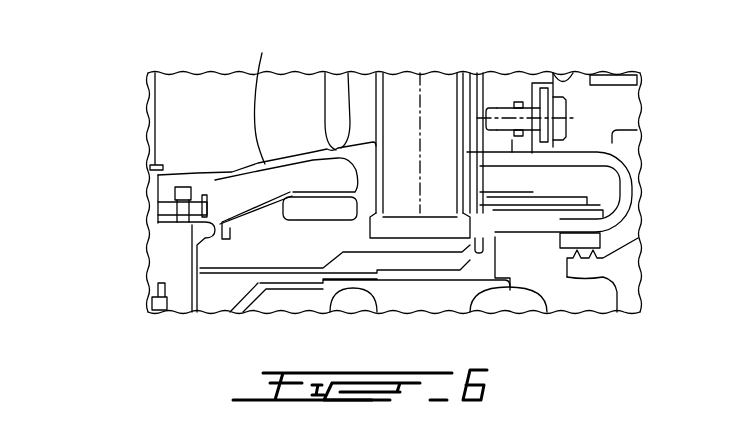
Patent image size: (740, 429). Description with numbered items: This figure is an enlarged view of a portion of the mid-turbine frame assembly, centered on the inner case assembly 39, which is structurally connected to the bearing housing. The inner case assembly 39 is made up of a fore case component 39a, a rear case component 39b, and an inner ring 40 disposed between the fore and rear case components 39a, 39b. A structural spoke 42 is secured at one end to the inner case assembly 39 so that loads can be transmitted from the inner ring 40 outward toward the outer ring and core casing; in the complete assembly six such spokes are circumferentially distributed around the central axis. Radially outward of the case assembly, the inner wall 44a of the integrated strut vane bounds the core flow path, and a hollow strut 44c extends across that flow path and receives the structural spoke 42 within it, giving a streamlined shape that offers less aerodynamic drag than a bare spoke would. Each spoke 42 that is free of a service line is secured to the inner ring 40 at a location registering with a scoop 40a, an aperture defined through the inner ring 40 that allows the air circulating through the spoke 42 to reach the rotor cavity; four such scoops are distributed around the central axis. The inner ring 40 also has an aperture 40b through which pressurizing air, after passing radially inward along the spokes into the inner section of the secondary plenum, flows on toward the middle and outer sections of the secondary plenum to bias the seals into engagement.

The inner case assembly 39 is at (222, 190).
The fore case component 39a is at (190, 232).
The rear case component 39b is at (576, 75).
The inner ring 40 is at (273, 232).
The scoop 40a is at (487, 232).
The aperture 40b is at (283, 207).
The structural spoke 42 is at (330, 160).
The inner wall 44a is at (267, 93).
The strut 44c is at (345, 74).